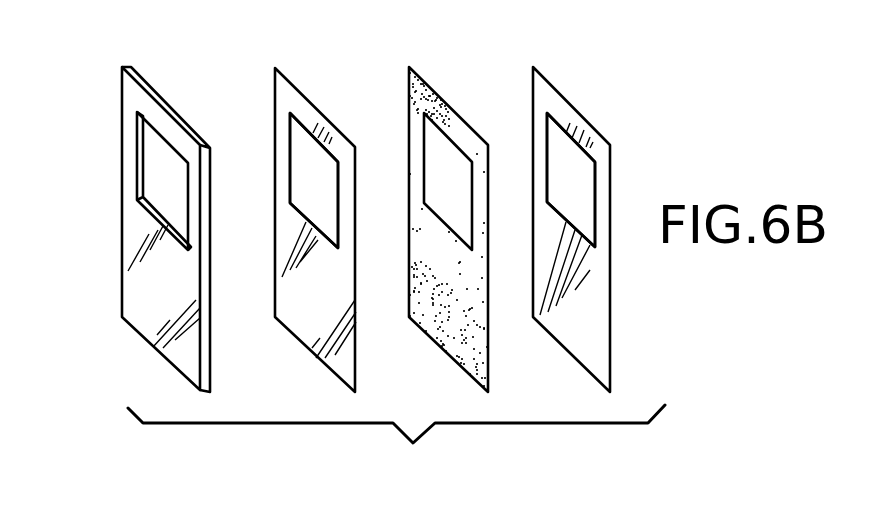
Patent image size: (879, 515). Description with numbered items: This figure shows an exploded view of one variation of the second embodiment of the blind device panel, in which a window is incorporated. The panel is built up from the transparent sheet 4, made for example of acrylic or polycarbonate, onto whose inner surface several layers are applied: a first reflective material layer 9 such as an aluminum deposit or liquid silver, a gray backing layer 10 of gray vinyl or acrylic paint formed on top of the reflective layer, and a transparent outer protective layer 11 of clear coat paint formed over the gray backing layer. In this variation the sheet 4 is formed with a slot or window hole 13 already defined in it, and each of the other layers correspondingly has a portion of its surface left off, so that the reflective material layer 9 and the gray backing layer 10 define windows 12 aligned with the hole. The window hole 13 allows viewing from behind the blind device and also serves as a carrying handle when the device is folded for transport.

The transparent sheet 4 is at (172, 108).
The first reflective material layer 9 is at (307, 110).
The gray backing layer 10 is at (442, 112).
The transparent outer protective layer 11 is at (567, 110).
The windows 12 is at (326, 185).
The window hole 13 is at (155, 176).